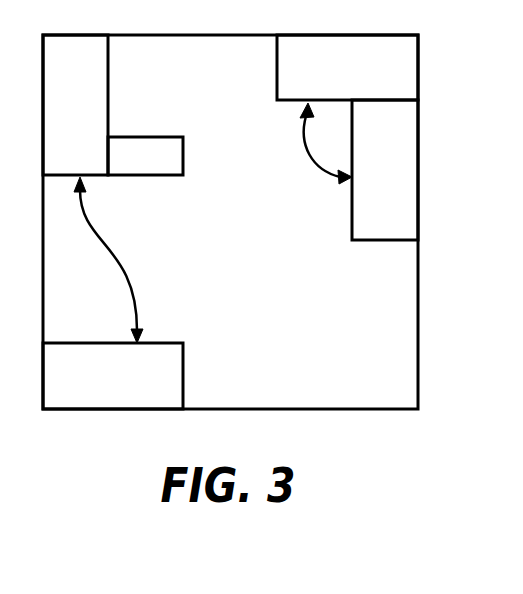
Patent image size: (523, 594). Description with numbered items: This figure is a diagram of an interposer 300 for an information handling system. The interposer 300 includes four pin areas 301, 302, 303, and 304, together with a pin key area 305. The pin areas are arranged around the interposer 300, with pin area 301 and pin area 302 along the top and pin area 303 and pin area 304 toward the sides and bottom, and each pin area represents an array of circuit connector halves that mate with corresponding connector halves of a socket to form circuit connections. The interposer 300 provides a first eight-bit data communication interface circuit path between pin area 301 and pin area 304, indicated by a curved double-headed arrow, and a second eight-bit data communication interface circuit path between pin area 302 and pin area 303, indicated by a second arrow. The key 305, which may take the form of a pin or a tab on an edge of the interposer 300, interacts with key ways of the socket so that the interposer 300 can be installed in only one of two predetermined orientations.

The interposer 300 is at (230, 222).
The pin area 301 is at (75, 105).
The pin area 302 is at (347, 67).
The pin area 303 is at (385, 170).
The pin area 304 is at (113, 376).
The pin key area 305 is at (165, 137).